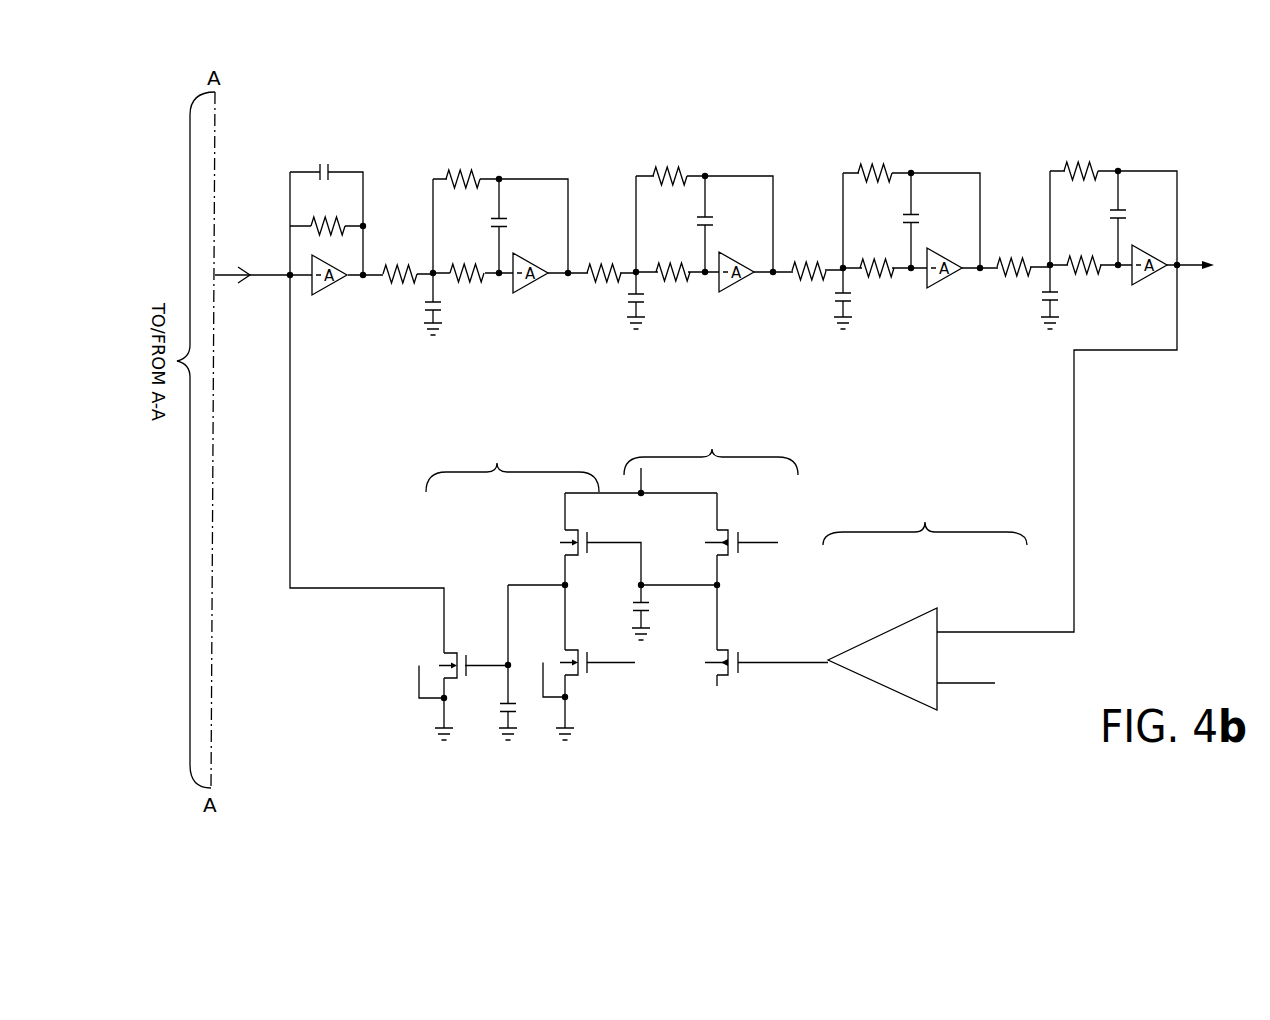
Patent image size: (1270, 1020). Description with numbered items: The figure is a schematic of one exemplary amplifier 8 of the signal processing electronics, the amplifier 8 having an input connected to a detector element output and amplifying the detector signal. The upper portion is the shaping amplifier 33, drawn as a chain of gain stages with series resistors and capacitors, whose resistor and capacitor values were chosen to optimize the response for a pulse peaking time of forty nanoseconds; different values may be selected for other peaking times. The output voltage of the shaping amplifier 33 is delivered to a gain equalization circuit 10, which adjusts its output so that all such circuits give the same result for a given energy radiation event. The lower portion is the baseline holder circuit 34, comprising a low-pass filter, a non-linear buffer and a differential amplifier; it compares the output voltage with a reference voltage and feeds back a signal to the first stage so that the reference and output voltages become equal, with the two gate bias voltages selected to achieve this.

The amplifier 8 is at (778, 110).
The gain equalization circuit 10 is at (1193, 275).
The shaping amplifier 33 is at (905, 377).
The baseline holder circuit 34 is at (432, 385).